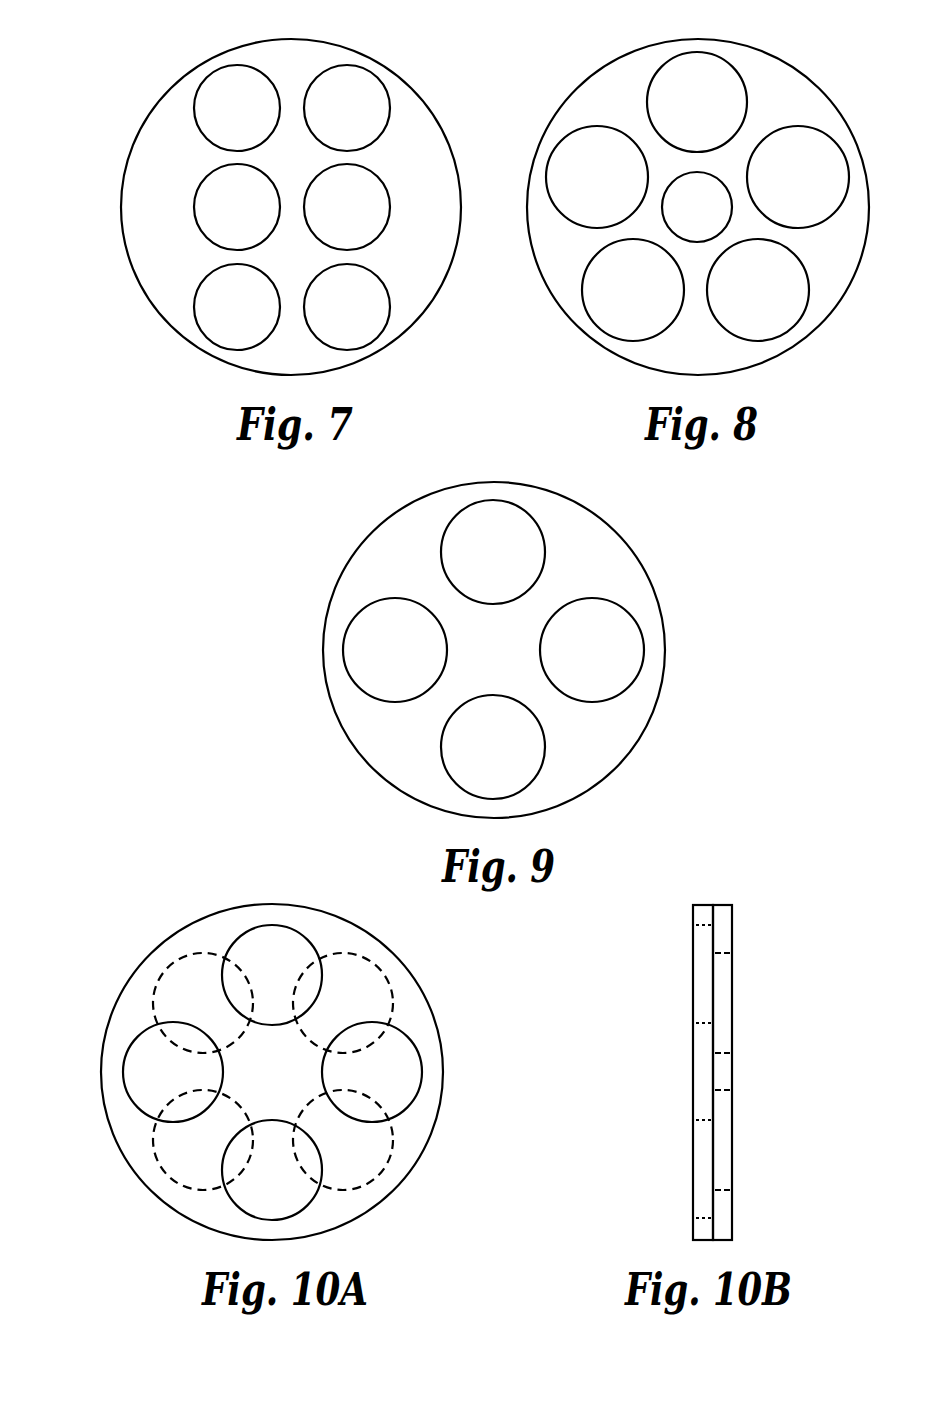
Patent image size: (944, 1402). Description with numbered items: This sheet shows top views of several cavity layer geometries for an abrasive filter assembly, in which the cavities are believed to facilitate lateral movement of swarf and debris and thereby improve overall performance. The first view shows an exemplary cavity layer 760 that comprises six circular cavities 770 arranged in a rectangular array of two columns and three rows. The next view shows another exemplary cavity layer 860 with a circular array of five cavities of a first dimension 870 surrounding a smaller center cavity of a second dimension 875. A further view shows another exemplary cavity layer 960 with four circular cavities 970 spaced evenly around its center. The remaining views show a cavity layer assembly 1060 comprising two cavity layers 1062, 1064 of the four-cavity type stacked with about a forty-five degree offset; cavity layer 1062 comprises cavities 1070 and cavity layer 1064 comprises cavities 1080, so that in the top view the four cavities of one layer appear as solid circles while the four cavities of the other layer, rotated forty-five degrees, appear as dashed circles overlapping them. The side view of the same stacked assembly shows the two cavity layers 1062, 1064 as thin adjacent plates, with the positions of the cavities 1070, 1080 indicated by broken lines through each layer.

In FIG. 7, the cavity layer 760 is at (313, 55).
In FIG. 7, the cavities 770 is at (207, 78).
In FIG. 8, the cavity layer 860 is at (785, 88).
In FIG. 8, the cavities of a first dimension 870 is at (700, 50).
In FIG. 8, the center cavity of a second dimension 875 is at (673, 182).
In FIG. 9, the cavity layer 960 is at (583, 532).
In FIG. 9, the cavities 970 is at (497, 502).
In FIG. 10A, the cavity layer assembly 1060 is at (168, 911).
In FIG. 10A, the cavity layer 1062 is at (410, 1002).
In FIG. 10B, the cavity layer 1062 is at (693, 1080).
In FIG. 10A, the cavity layer 1064 is at (328, 1039).
In FIG. 10B, the cavity layer 1064 is at (732, 1075).
In FIG. 10A, the cavities 1070 is at (420, 1067).
In FIG. 10A, the cavities 1080 is at (372, 1099).